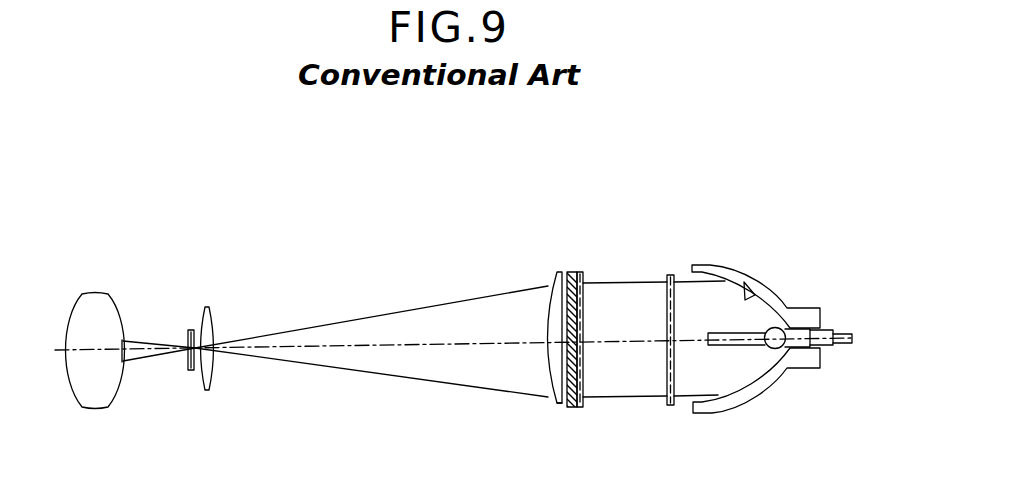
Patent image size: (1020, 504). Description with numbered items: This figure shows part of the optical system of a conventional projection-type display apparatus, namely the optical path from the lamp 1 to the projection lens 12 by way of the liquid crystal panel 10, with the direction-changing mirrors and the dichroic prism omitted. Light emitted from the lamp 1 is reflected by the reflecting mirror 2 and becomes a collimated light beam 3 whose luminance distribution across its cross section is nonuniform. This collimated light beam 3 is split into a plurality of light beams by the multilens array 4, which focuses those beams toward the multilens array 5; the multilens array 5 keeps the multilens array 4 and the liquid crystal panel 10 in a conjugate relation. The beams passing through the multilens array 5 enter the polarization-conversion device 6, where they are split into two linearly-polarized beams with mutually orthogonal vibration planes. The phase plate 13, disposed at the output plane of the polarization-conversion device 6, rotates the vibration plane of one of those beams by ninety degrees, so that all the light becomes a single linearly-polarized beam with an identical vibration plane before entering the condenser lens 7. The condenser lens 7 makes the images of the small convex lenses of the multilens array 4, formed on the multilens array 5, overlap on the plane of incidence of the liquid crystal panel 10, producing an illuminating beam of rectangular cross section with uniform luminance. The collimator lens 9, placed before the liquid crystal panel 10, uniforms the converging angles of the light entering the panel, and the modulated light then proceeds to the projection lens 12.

The lamp 1 is at (779, 327).
The reflecting mirror 2 is at (744, 284).
The collimated light beam 3 is at (688, 380).
The multilens array 4 is at (670, 275).
The multilens array 5 is at (580, 272).
The polarization-conversion device 6 is at (570, 272).
The condenser lens 7 is at (552, 272).
The collimator lens 9 is at (206, 305).
The liquid crystal panel 10 is at (190, 330).
The projection lens 12 is at (97, 288).
The phase plate 13 is at (558, 407).